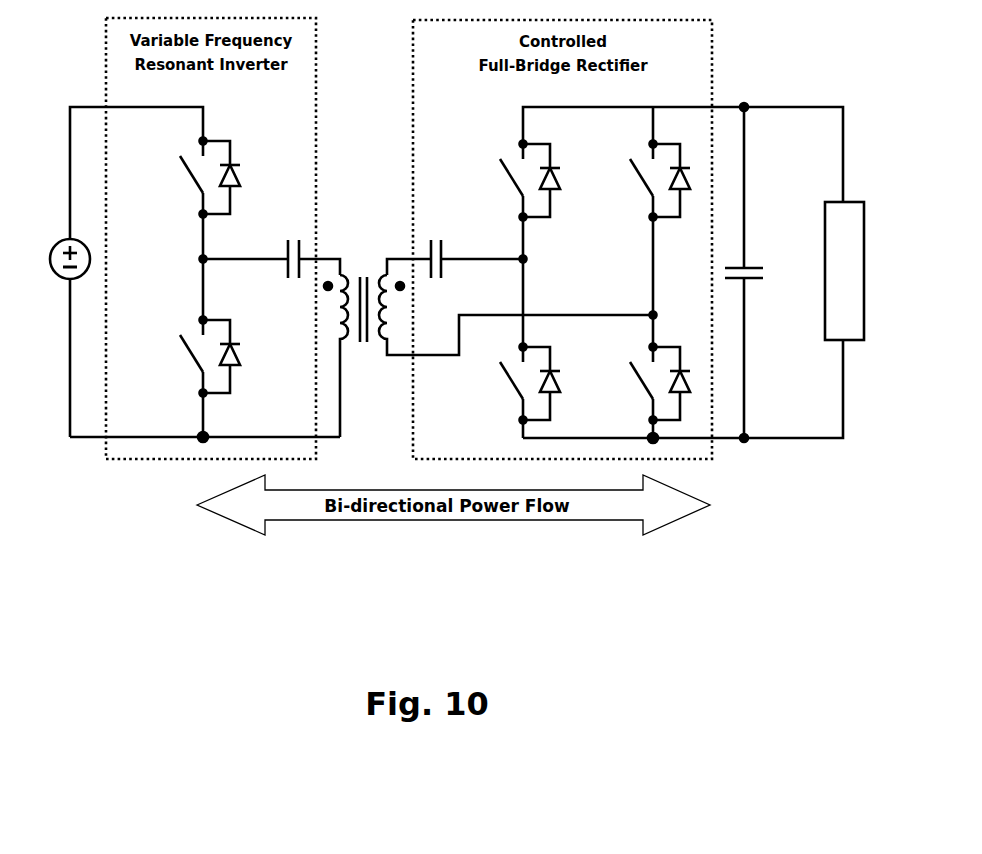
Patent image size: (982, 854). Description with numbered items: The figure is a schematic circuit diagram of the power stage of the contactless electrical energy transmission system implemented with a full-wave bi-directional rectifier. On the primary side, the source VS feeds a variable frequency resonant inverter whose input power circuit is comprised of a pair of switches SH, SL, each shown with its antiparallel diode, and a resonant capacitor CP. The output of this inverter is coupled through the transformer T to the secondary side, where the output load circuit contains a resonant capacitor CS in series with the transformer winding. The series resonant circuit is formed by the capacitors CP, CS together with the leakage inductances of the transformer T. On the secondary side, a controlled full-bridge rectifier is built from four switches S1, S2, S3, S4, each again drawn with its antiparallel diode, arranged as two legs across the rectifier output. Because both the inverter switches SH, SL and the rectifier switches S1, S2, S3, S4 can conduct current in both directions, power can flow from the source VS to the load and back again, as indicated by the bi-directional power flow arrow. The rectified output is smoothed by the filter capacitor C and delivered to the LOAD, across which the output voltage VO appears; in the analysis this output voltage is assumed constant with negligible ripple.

The source VS is at (56, 259).
The switch SH is at (187, 178).
The switch SL is at (187, 357).
The resonant capacitor CP is at (271, 242).
The transformer T is at (488, 330).
The resonant capacitor CS is at (455, 242).
The rectifier switch S1 is at (515, 181).
The rectifier switch S2 is at (645, 181).
The rectifier switch S3 is at (515, 384).
The rectifier switch S4 is at (645, 384).
The filter capacitor C is at (754, 272).
The load LOAD is at (844, 271).
The output voltage VO is at (883, 267).